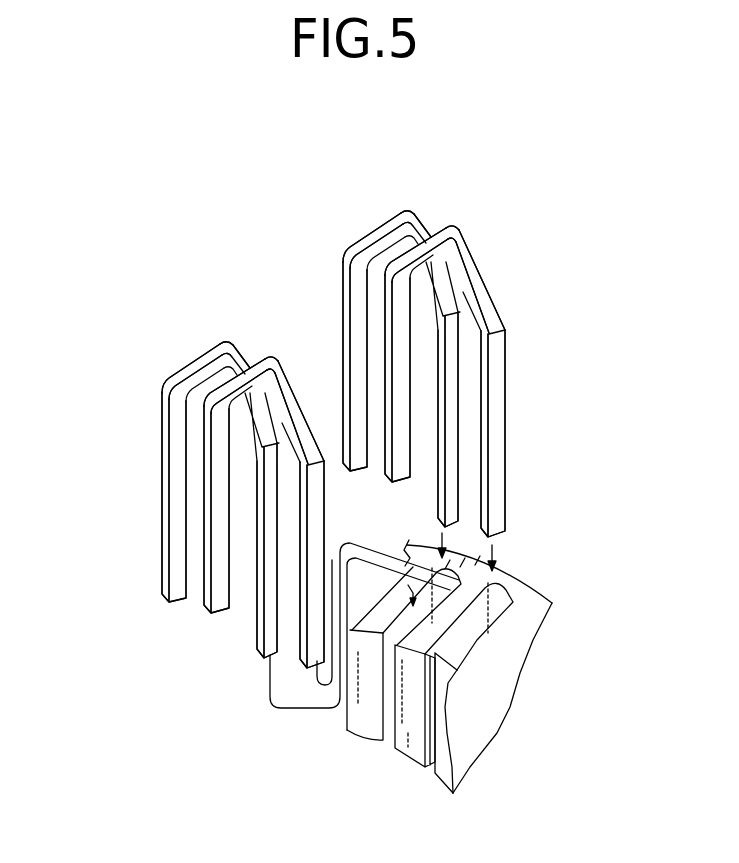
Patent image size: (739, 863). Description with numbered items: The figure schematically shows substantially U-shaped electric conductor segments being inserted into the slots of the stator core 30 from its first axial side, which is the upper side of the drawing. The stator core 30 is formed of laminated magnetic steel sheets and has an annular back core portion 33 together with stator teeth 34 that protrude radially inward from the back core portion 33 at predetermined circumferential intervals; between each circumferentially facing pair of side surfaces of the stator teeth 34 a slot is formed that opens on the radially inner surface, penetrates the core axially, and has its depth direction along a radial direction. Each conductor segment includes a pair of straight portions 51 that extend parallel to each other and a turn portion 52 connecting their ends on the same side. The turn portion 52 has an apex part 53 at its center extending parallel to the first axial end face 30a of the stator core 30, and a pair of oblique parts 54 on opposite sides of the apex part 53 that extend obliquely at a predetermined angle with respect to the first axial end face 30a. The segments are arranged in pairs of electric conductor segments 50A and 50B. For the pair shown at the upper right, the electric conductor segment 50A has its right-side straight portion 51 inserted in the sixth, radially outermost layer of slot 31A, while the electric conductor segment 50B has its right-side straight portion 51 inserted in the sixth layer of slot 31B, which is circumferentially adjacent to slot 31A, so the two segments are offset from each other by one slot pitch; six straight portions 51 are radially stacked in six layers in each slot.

The stator core 30 is at (450, 671).
The first axial end face 30a is at (527, 595).
The slot 31A is at (473, 623).
The slot 31B is at (460, 620).
The back core portion 33 is at (550, 608).
The stator teeth 34 is at (360, 712).
The electric conductor segment 50A is at (492, 280).
The electric conductor segment 50B is at (370, 236).
The straight portions 51 is at (452, 438).
The turn portion 52 is at (383, 227).
The apex part 53 is at (418, 211).
The oblique parts 54 is at (432, 233).